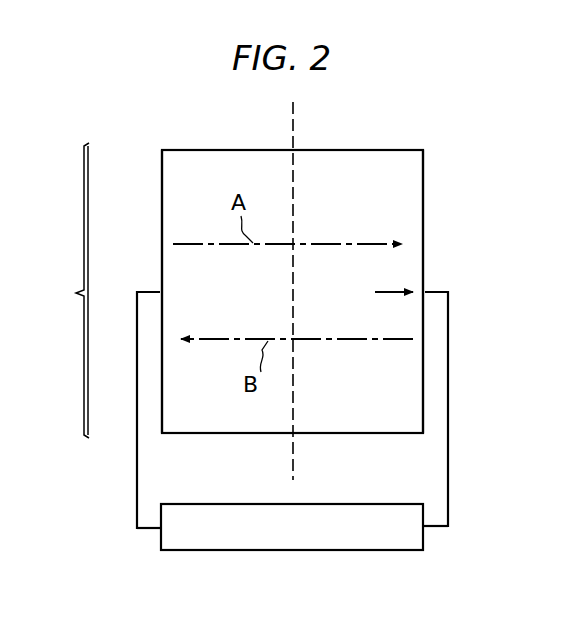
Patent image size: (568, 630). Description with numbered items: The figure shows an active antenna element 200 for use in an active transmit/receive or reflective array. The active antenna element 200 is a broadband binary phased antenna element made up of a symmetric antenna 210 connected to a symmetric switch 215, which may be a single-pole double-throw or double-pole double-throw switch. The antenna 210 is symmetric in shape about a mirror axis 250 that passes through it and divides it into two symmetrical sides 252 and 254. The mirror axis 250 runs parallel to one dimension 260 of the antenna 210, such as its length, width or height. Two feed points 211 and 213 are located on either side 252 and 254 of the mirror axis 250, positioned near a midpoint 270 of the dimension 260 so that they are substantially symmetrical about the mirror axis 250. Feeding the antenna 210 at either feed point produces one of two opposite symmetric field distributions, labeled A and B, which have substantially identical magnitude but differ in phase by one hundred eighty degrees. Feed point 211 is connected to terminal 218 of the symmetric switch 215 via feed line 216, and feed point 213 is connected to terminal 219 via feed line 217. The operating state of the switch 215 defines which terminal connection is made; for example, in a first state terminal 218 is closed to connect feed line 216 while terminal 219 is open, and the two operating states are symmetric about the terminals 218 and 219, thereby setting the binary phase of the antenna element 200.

The active antenna element 200 is at (443, 84).
The symmetric antenna 210 is at (426, 194).
The feed point 211 is at (158, 290).
The feed point 213 is at (428, 288).
The symmetric switch 215 is at (356, 552).
The feed line 216 is at (136, 476).
The feed line 217 is at (449, 410).
The terminal 218 is at (153, 534).
The terminal 219 is at (428, 534).
The mirror axis 250 is at (291, 457).
The symmetrical side 252 is at (218, 149).
The symmetrical side 254 is at (363, 149).
The dimension 260 is at (58, 290).
The midpoint 270 is at (375, 291).